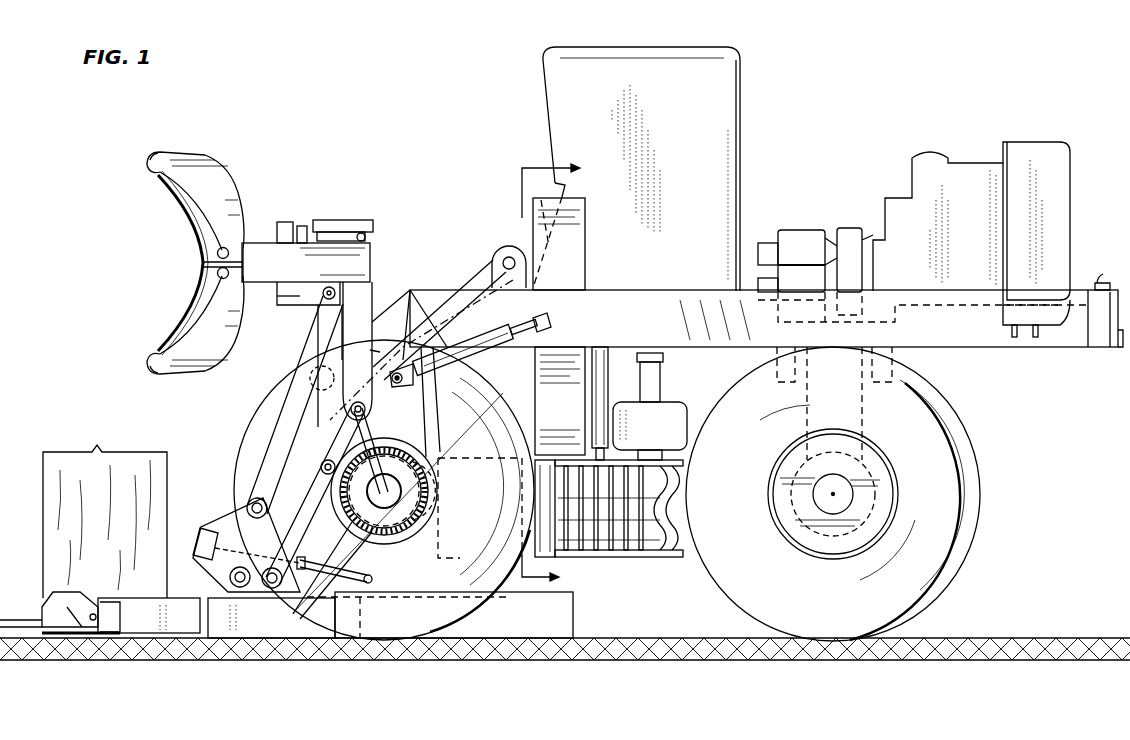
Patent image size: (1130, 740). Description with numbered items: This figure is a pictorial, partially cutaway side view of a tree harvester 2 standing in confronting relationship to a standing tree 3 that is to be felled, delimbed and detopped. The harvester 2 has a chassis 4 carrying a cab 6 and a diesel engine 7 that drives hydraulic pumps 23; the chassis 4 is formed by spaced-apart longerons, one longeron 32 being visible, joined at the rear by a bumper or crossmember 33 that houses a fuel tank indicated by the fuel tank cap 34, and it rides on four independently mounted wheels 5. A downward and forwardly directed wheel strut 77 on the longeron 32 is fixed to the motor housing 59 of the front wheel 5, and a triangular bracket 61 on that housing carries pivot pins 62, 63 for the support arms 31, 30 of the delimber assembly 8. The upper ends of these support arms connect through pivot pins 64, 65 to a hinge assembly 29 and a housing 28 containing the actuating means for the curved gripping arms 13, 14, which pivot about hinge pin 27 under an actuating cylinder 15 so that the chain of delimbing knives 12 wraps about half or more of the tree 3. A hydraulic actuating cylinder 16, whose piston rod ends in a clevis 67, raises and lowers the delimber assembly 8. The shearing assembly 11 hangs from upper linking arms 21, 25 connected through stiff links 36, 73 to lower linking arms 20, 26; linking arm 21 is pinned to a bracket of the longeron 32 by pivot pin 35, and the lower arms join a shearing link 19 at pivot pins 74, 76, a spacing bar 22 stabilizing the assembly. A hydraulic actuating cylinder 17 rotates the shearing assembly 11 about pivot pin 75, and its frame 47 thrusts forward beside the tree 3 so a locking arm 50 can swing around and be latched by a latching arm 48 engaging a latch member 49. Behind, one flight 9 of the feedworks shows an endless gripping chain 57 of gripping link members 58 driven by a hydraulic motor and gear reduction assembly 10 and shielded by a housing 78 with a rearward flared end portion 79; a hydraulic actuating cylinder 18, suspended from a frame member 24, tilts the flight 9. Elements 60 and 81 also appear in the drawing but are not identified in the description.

The tree harvester 2 is at (1035, 398).
The standing tree 3 is at (42, 486).
The chassis 4 is at (963, 348).
The wheels 5 is at (528, 437).
The cab 6 is at (742, 91).
The diesel engine 7 is at (967, 170).
The delimber assembly 8 is at (243, 182).
The flight 9 is at (650, 562).
The hydraulic motor and gear reduction assembly 10 is at (683, 408).
The shearing assembly 11 is at (528, 638).
The delimbing knives 12 is at (190, 200).
The curved gripping arm 13 is at (205, 178).
The curved gripping arm 14 is at (230, 340).
The actuating cylinder 15 is at (348, 224).
The hydraulic actuating cylinder 16 is at (465, 345).
The hydraulic actuating cylinder 17 is at (293, 552).
The hydraulic actuating cylinder 18 is at (601, 365).
The shearing link 19 is at (232, 510).
The lower linking arm 20 is at (270, 430).
The upper linking arm 21 is at (402, 302).
The spacing bar 22 is at (200, 528).
The hydraulic pumps 23 is at (800, 228).
The frame member 24 is at (565, 365).
The upper linking arm 25 is at (485, 372).
The lower linking arm 26 is at (333, 516).
The hinge pin 27 is at (286, 224).
The housing 28 is at (258, 252).
The hinge assembly 29 is at (300, 307).
The support arm 30 is at (373, 300).
The support arm 31 is at (330, 345).
The longeron 32 is at (1047, 348).
The bumper or crossmember 33 is at (1114, 348).
The fuel tank cap 34 is at (1101, 282).
The pivot pin 35 is at (505, 257).
The stiff link 36 is at (310, 378).
The frame 47 is at (252, 638).
The latching arm 48 is at (78, 595).
The latch member 49 is at (60, 633).
The locking arm 50 is at (16, 619).
The endless gripping chain 57 is at (633, 560).
The gripping link members 58 is at (608, 560).
The motor housing 59 is at (440, 499).
The wheel hub 60 is at (878, 486).
The bracket 61 is at (386, 428).
The pivot pin 62 is at (376, 345).
The pivot pin 63 is at (367, 411).
The pivot pin 64 is at (325, 300).
The pivot pin 65 is at (370, 240).
The clevis 67 is at (400, 370).
The stiff link 73 is at (384, 491).
The pivot pin 74 is at (262, 498).
The pivot pin 75 is at (229, 580).
The pivot pin 76 is at (272, 589).
The wheel strut 77 is at (440, 444).
The housing 78 is at (442, 574).
The rearward flared end portion 79 is at (545, 527).
The bar 81 is at (322, 222).